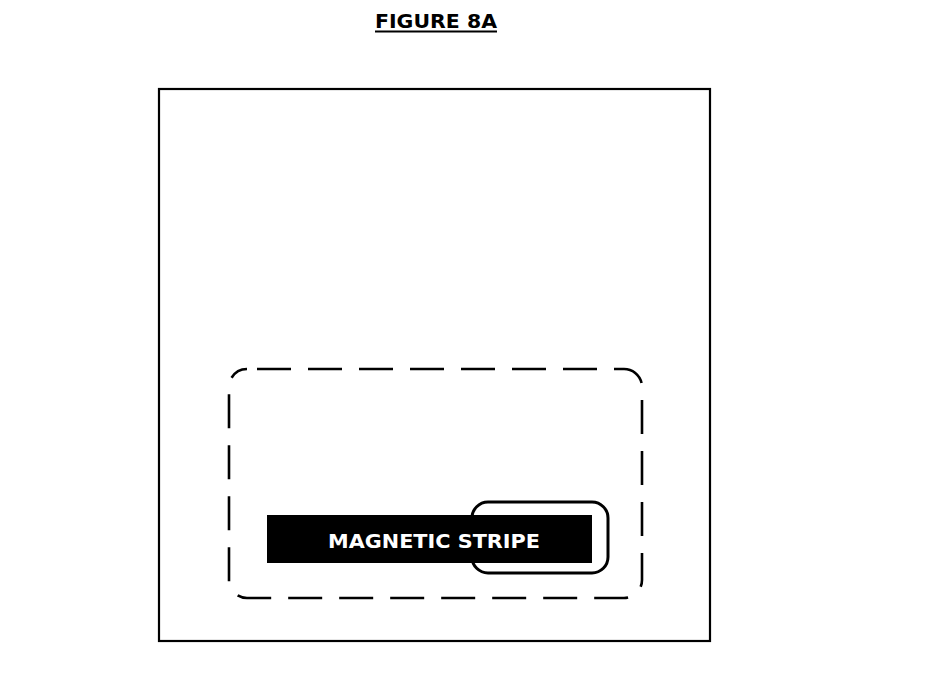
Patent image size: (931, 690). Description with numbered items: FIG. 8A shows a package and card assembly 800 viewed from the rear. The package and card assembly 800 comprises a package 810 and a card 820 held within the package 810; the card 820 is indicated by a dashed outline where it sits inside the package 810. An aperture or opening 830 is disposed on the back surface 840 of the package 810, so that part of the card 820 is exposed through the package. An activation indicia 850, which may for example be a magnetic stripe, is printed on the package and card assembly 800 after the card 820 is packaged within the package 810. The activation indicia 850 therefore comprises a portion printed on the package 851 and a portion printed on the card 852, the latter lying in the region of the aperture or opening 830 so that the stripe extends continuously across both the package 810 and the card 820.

The package and card assembly 800 is at (80, 399).
The package 810 is at (499, 365).
The card 820 is at (534, 472).
The aperture or opening 830 is at (656, 514).
The back surface 840 is at (232, 135).
The activation indicia 850 is at (429, 486).
The portion printed on the package 851 is at (369, 506).
The portion printed on the card 852 is at (526, 506).